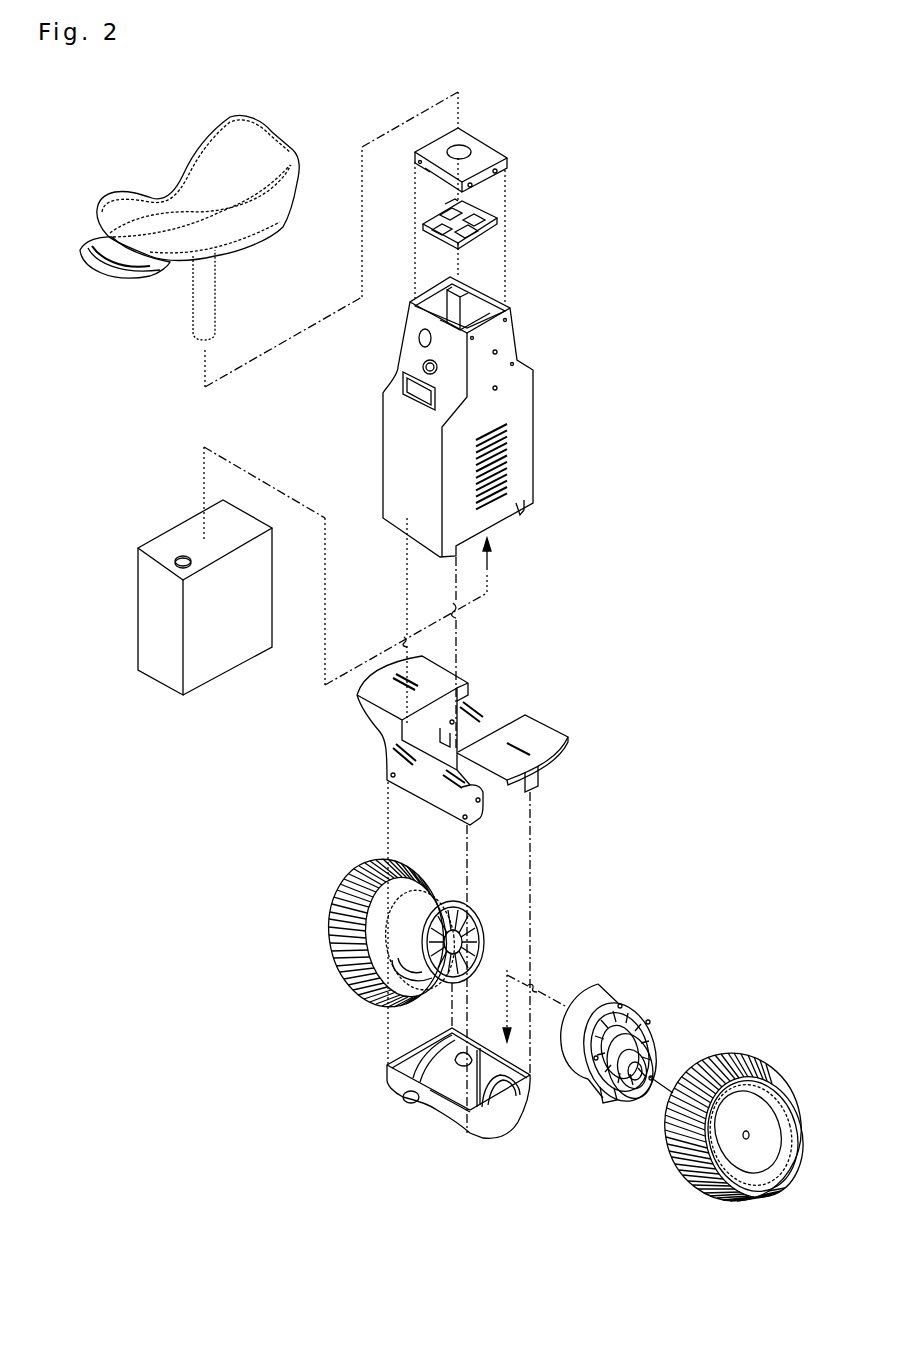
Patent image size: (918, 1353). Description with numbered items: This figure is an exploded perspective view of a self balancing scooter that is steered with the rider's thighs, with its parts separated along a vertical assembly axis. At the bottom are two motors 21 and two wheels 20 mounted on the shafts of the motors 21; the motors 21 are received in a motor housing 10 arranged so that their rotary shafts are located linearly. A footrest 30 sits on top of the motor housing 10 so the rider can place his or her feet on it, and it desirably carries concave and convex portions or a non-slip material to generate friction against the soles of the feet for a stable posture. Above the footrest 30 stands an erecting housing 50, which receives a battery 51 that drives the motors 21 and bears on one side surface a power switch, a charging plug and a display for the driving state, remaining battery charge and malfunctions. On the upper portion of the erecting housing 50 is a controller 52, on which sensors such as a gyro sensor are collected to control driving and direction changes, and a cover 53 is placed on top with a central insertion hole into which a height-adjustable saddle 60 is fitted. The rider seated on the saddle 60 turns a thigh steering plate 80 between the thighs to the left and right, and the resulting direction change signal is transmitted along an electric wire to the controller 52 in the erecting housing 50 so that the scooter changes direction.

The motor housing 10 is at (511, 1118).
The wheel 20 is at (328, 938).
The motor 21 is at (482, 924).
The footrest 30 is at (538, 732).
The erecting housing 50 is at (527, 431).
The battery 51 is at (155, 545).
The controller 52 is at (497, 218).
The cover 53 is at (483, 150).
The saddle 60 is at (250, 135).
The thigh steering plate 80 is at (124, 282).